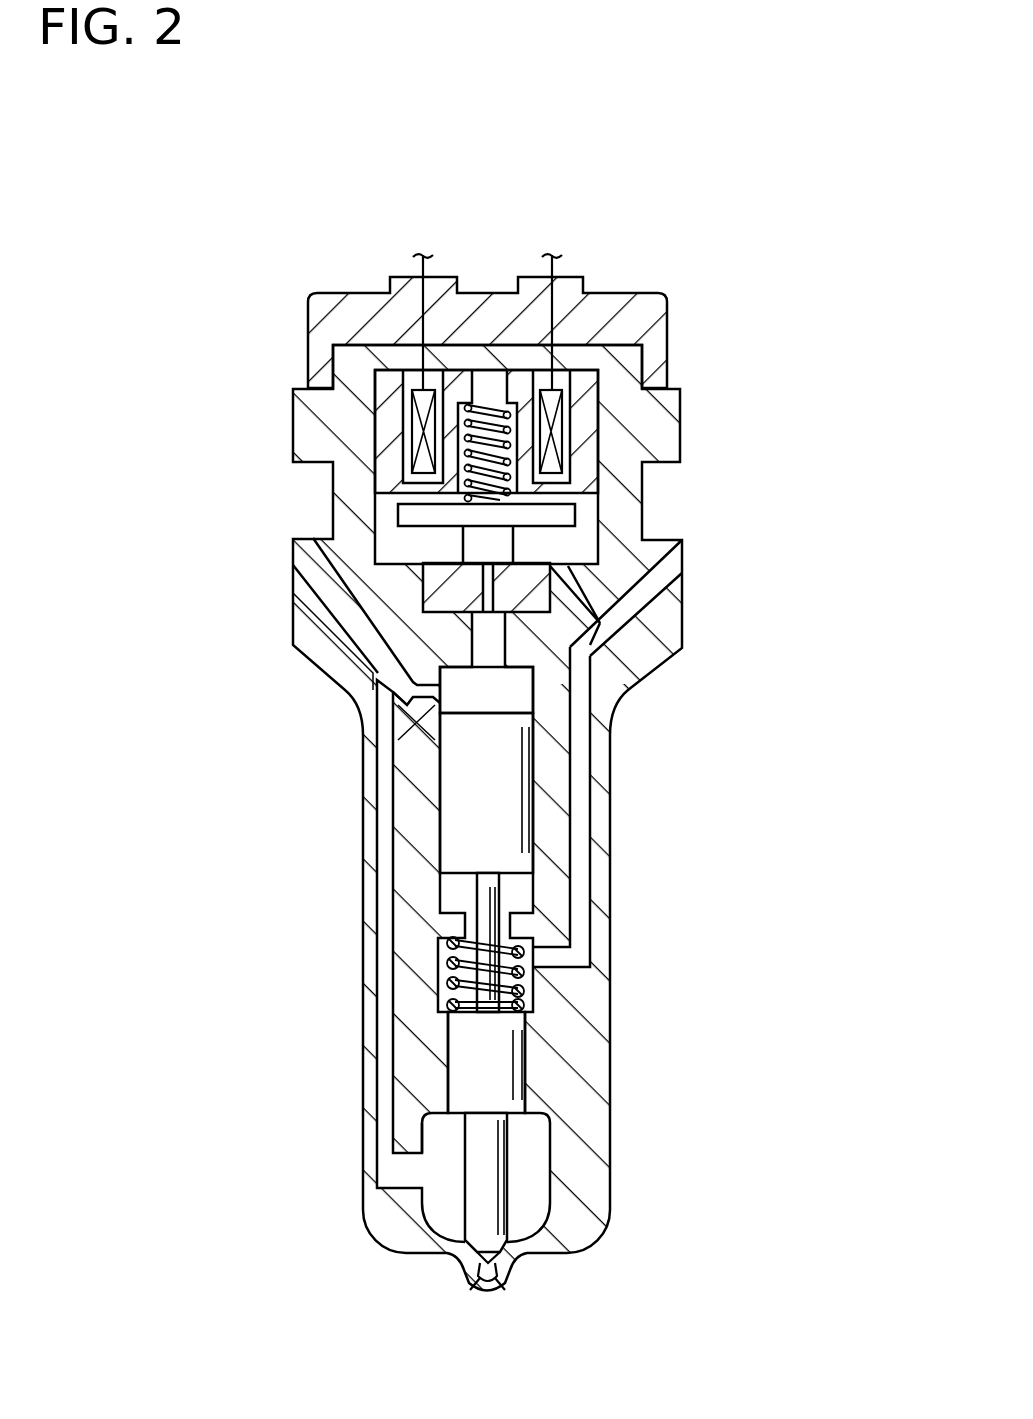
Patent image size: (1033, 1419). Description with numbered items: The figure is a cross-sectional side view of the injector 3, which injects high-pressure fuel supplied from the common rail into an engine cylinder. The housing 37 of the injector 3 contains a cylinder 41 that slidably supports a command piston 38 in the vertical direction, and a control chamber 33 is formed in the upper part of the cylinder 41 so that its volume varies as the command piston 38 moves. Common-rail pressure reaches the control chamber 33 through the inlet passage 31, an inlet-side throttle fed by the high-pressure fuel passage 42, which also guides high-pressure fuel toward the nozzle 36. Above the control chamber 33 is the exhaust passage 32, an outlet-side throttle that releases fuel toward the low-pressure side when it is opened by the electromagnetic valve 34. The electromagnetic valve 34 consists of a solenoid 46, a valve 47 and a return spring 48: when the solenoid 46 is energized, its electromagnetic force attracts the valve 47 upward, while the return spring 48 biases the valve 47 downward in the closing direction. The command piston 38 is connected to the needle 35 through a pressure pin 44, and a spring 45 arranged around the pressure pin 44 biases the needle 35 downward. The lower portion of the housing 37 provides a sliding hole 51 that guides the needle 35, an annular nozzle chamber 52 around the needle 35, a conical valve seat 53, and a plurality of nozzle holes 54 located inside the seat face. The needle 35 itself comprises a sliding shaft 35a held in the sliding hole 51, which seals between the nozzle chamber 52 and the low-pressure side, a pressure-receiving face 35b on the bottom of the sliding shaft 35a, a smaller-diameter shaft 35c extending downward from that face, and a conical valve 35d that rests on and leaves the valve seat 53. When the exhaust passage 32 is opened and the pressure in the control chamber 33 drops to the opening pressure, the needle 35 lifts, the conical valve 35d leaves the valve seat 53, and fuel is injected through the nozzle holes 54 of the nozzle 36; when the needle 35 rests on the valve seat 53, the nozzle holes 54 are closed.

The injector 3 is at (268, 291).
The inlet passage 31 is at (420, 702).
The exhaust passage 32 is at (470, 600).
The control chamber 33 is at (520, 691).
The electromagnetic valve 34 is at (597, 409).
The needle 35 is at (337, 1145).
The sliding shaft 35a is at (460, 1046).
The pressure-receiving face 35b is at (430, 1120).
The shaft 35c is at (477, 1165).
The conical valve 35d is at (455, 1233).
The nozzle 36 is at (424, 1283).
The housing 37 is at (608, 972).
The command piston 38 is at (460, 778).
The cylinder 41 is at (540, 782).
The high-pressure fuel passage 42 is at (330, 618).
The pressure pin 44 is at (497, 892).
The spring 45 is at (455, 945).
The solenoid 46 is at (556, 418).
The valve 47 is at (503, 542).
The return spring 48 is at (510, 432).
The sliding hole 51 is at (522, 1057).
The nozzle chamber 52 is at (537, 1183).
The valve seat 53 is at (505, 1215).
The nozzle holes 54 is at (507, 1280).